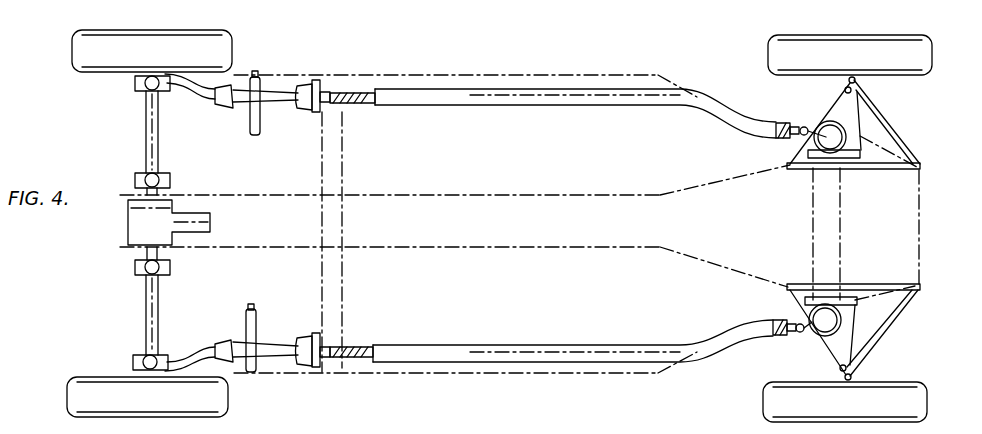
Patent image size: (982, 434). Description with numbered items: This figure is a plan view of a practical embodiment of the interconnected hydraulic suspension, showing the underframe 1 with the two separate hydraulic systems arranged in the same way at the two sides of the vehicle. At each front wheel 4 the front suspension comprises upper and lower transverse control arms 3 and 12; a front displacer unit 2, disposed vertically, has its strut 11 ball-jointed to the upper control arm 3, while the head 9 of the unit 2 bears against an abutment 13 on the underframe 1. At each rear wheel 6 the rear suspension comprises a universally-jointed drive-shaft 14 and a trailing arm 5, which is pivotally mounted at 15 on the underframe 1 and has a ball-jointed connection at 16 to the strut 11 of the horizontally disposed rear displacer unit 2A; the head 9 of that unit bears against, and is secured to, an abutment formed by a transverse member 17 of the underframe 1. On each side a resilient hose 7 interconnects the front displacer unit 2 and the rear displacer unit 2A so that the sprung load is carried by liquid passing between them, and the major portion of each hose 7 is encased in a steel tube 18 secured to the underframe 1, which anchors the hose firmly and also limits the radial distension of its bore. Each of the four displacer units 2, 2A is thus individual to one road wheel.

The underframe structure 1 is at (921, 245).
The front displacer unit 2 is at (839, 147).
The rear displacer unit 2A is at (305, 82).
The upper transverse control arm 3 is at (842, 108).
The front wheel 4 is at (930, 60).
The trailing arm 5 is at (207, 98).
The rear wheel 6 is at (70, 38).
The resilient hose 7 is at (362, 104).
The head 9 is at (822, 142).
The strut 11 is at (284, 97).
The lower transverse control arm 12 is at (897, 125).
The abutment 13 is at (828, 243).
The universally-jointed drive-shaft 14 is at (146, 133).
The pivot 15 is at (251, 125).
The ball-jointed connection 16 is at (240, 93).
The transverse member 17 is at (326, 293).
The steel tube 18 is at (504, 89).